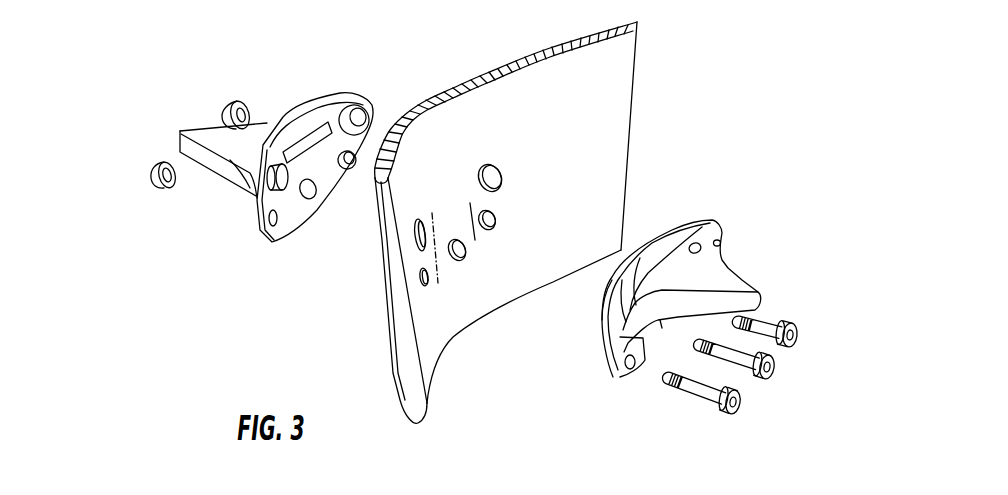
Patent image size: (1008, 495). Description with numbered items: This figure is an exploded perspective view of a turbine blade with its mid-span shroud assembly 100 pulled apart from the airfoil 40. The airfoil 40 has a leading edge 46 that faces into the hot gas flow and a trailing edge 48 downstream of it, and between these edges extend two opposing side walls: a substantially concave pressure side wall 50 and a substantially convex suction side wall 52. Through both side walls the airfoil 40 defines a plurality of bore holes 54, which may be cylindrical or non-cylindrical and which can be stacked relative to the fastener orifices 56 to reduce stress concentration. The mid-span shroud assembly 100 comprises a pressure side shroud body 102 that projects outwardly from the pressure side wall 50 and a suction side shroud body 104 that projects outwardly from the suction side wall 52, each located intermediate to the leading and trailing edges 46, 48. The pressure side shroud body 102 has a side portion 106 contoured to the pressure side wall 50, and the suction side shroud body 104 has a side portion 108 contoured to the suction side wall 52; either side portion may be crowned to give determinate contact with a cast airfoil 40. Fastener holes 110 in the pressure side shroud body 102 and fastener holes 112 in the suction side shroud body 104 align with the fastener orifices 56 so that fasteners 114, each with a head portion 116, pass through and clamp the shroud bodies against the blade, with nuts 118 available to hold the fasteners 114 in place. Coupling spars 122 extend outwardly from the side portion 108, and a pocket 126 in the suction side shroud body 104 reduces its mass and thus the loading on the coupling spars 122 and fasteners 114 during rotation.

The airfoil 40 is at (497, 70).
The leading edge 46 is at (378, 300).
The trailing edge 48 is at (642, 116).
The pressure side wall 50 is at (434, 346).
The suction side wall 52 is at (440, 88).
The bore hole 54 is at (426, 222).
The fastener orifice 56 is at (494, 224).
The mid-span shroud assembly 100 is at (148, 254).
The pressure side shroud body 102 is at (711, 274).
The suction side shroud body 104 is at (267, 125).
The side portion 106 is at (604, 318).
The side portion 108 is at (339, 98).
The fastener hole 110 is at (634, 368).
The fastener hole 112 is at (348, 169).
The fastener 114 is at (770, 325).
The head portion 116 is at (805, 337).
The nut 118 is at (237, 101).
The coupling spar 122 is at (361, 110).
The pocket 126 is at (324, 152).